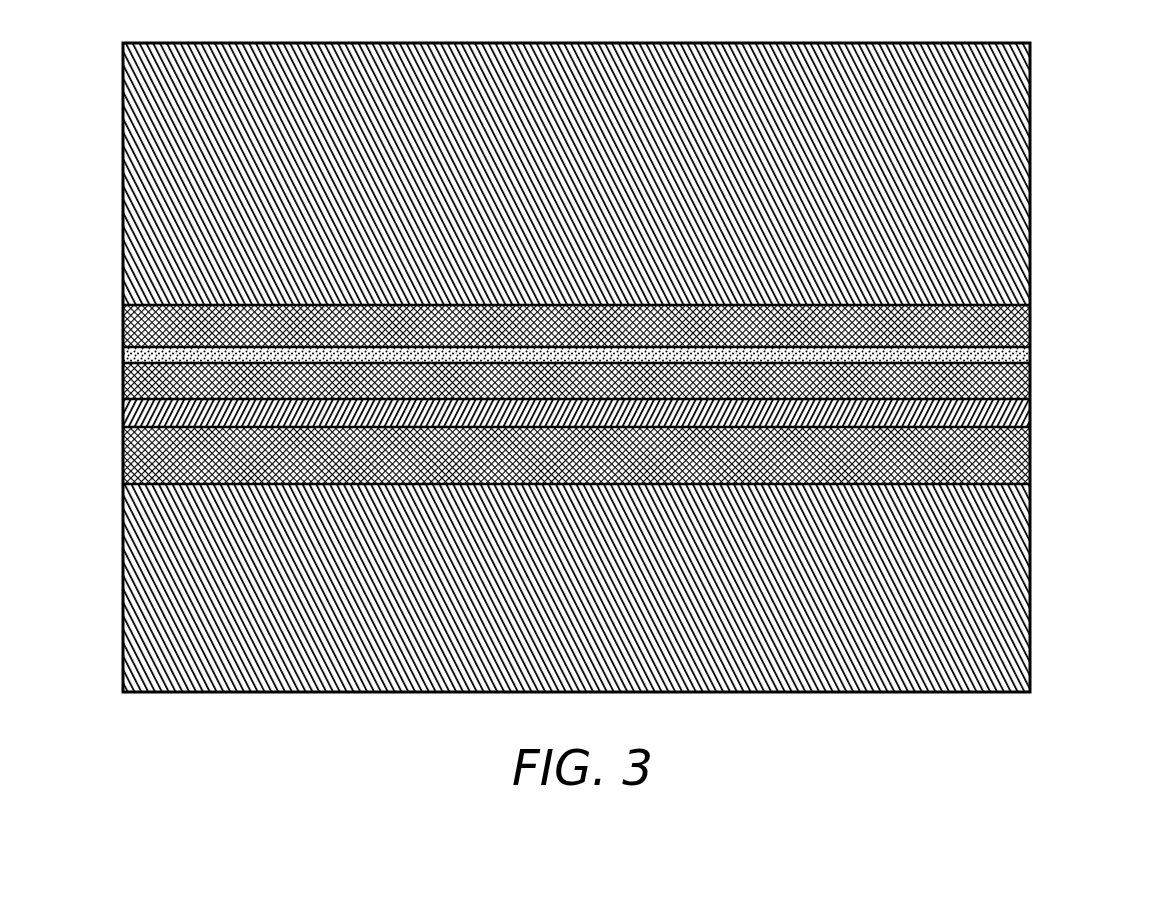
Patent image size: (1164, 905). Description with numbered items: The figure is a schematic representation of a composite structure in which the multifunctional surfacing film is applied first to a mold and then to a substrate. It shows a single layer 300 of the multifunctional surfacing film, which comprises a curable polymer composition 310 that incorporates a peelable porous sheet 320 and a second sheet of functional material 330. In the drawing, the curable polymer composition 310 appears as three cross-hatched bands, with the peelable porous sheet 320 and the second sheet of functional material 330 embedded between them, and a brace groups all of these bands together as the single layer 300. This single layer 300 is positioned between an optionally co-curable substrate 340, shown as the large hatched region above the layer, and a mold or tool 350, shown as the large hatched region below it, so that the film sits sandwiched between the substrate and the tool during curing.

The single layer of the multifunctional surfacing film 300 is at (1070, 310).
The curable polymer composition 310 is at (133, 320).
The peelable porous sheet 320 is at (132, 418).
The second sheet of functional material 330 is at (124, 357).
The co-curable substrate 340 is at (131, 192).
The mold or tool 350 is at (132, 590).